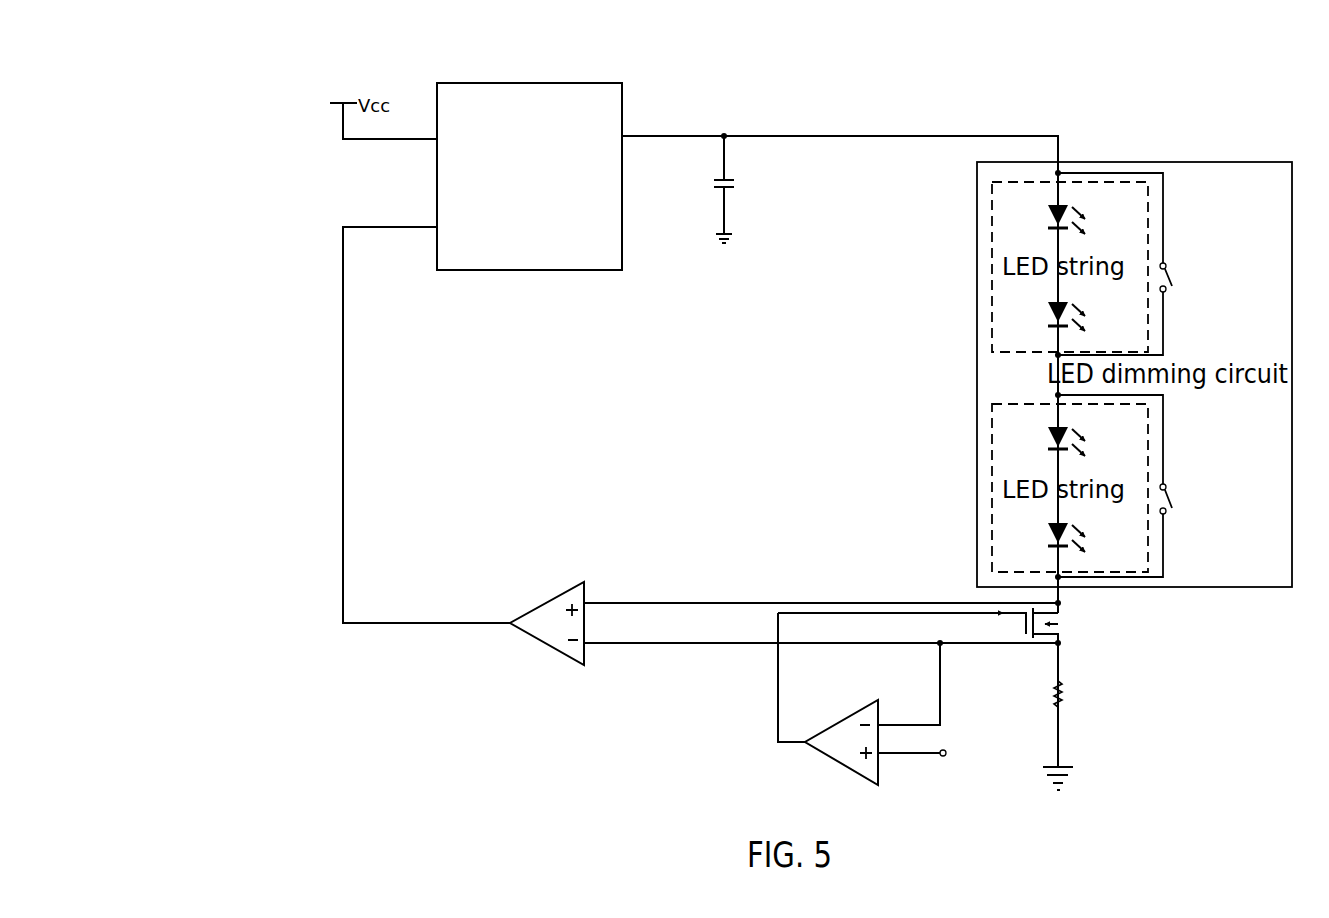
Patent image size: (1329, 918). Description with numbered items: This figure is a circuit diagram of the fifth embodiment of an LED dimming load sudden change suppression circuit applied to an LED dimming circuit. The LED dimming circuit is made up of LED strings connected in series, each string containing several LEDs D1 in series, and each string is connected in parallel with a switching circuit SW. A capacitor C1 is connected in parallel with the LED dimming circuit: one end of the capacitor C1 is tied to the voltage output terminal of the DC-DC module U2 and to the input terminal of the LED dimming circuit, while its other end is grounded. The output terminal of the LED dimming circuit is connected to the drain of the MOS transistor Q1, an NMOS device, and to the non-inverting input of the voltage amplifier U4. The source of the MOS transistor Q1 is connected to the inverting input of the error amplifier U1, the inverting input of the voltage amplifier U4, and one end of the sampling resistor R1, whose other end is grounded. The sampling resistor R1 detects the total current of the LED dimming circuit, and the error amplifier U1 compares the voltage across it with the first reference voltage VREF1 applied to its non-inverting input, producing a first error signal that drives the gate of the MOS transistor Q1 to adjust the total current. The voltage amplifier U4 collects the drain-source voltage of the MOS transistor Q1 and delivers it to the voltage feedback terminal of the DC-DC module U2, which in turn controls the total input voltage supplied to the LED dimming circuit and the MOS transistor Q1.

The DC-DC module U2 is at (529, 160).
The capacitor C1 is at (736, 188).
The LEDs D1 is at (1086, 380).
The switching circuit SW is at (1136, 375).
The MOS transistor Q1 is at (940, 683).
The sampling resistor R1 is at (1072, 735).
The voltage amplifier U4 is at (784, 625).
The error amplifier U1 is at (860, 700).
The first reference voltage VREF1 is at (929, 769).